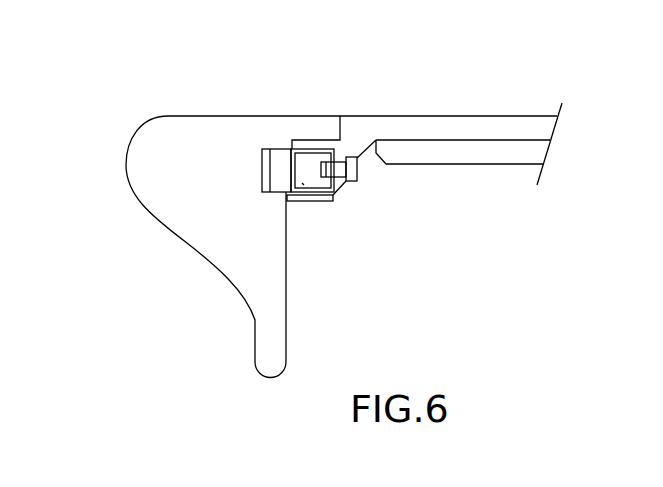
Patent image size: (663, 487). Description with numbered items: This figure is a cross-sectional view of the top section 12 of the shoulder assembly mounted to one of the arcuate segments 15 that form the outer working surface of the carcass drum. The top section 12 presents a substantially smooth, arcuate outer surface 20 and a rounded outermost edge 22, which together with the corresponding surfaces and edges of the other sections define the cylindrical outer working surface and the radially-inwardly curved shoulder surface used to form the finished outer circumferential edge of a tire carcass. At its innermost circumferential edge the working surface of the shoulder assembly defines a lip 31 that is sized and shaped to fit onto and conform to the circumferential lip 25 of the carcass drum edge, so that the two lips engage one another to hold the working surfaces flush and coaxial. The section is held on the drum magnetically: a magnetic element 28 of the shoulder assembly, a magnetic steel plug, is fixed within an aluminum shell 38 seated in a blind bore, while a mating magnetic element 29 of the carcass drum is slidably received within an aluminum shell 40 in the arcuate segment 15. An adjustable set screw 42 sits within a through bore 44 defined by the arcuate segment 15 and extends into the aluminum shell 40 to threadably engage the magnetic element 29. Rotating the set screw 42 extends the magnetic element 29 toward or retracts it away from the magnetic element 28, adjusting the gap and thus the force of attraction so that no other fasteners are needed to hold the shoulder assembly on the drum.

The top section 12 is at (168, 98).
The arcuate segment 15 is at (485, 116).
The outer surface 20 is at (242, 115).
The outermost edge 22 is at (126, 168).
The circumferential lip 25 is at (302, 203).
The magnetic element 28 is at (284, 160).
The magnetic element 29 is at (302, 183).
The lip 31 is at (318, 127).
The aluminum shell 38 is at (262, 166).
The aluminum shell 40 is at (335, 187).
The adjustable set screw 42 is at (357, 171).
The through bore 44 is at (345, 157).